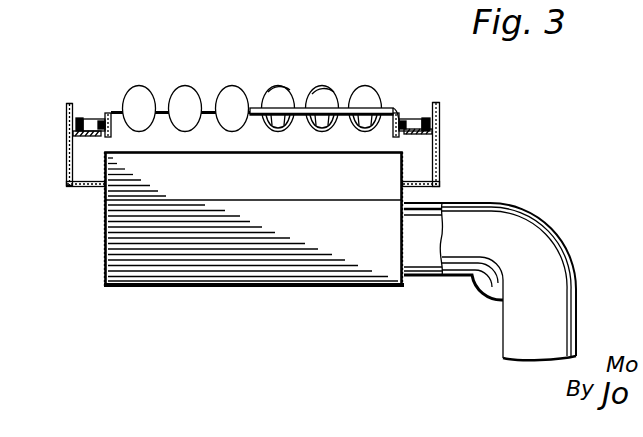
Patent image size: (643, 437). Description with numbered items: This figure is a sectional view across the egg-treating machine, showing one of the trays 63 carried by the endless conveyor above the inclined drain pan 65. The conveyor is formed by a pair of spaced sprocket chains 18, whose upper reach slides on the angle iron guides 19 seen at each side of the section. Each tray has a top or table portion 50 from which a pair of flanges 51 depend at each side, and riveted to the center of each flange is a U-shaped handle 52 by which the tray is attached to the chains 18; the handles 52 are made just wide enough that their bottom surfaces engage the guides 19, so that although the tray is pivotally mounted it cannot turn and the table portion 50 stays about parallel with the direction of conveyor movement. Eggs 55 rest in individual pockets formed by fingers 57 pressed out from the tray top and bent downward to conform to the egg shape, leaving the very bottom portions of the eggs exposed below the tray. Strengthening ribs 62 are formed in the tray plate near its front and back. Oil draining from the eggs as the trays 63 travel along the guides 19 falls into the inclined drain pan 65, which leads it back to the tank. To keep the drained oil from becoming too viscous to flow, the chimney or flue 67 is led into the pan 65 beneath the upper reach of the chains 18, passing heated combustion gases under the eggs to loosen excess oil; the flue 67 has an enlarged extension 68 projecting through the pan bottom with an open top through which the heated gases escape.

The sprocket chains 18 is at (80, 118).
The angle iron guides 19 is at (69, 103).
The top or table portion 50 is at (162, 112).
The flanges 51 is at (111, 128).
The U-shaped handle or projection 52 is at (102, 132).
The eggs 55 is at (314, 92).
The fingers 57 is at (318, 130).
The strengthening ribs 62 is at (366, 108).
The trays 63 is at (270, 106).
The inclined drain pan 65 is at (441, 152).
The chimney or flue 67 is at (567, 258).
The enlarged extension 68 is at (320, 283).